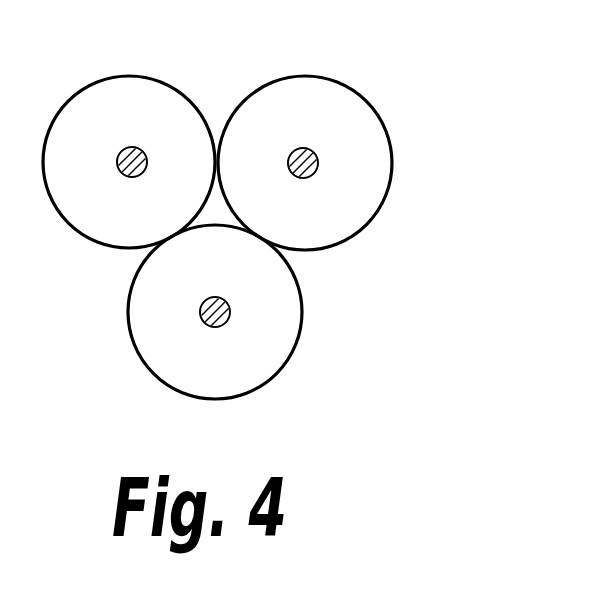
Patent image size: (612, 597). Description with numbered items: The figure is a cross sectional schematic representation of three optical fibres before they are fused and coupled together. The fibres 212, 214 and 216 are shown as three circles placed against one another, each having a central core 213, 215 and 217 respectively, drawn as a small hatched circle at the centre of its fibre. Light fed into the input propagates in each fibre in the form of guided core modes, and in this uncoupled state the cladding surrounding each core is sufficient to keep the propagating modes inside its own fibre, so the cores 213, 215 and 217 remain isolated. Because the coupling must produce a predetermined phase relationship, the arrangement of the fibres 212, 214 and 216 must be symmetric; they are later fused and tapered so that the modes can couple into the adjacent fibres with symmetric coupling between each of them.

The fibre 212 is at (122, 86).
The core 213 is at (141, 149).
The fibre 214 is at (348, 113).
The core 215 is at (318, 163).
The fibre 216 is at (167, 353).
The core 217 is at (228, 318).